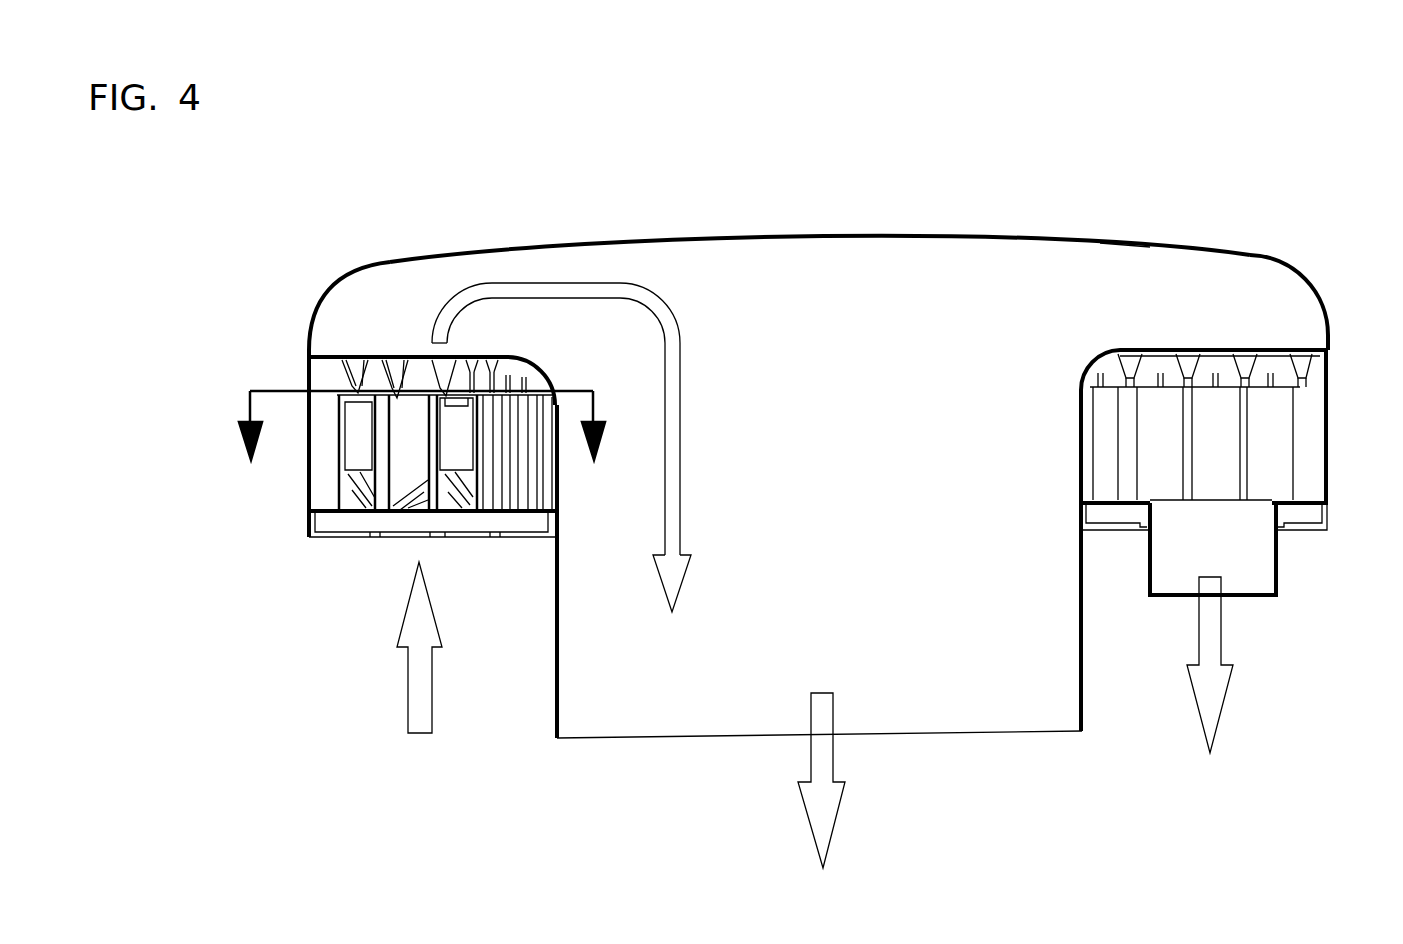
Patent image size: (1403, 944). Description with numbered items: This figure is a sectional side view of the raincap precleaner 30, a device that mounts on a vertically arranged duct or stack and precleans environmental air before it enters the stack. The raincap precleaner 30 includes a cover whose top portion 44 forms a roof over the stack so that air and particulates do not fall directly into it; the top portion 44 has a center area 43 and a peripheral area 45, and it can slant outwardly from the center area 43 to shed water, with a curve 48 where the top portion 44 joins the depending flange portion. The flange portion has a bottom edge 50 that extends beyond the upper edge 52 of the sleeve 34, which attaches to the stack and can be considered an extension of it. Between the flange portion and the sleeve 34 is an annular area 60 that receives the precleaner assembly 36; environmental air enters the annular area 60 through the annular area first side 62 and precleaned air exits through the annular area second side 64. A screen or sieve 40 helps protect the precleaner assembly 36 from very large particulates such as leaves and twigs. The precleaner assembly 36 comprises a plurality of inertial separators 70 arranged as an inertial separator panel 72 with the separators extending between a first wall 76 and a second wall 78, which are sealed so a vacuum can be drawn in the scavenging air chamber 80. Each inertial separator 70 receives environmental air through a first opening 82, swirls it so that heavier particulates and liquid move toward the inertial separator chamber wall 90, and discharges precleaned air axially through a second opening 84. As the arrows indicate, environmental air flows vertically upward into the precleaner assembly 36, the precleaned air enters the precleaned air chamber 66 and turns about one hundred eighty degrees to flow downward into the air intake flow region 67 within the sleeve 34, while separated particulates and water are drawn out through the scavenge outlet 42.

The raincap precleaner 30 is at (1130, 152).
The sleeve 34 is at (555, 690).
The precleaner assembly 36 is at (207, 450).
The screen or sieve 40 is at (495, 537).
The scavenge outlet 42 is at (1277, 580).
The center area 43 is at (875, 232).
The top portion 44 is at (1126, 243).
The peripheral area 45 is at (1278, 262).
The curve 48 is at (330, 290).
The bottom edge 50 is at (1082, 731).
The upper edge 52 is at (1120, 352).
The annular area 60 is at (363, 657).
The annular area first side 62 is at (368, 537).
The annular area second side 64 is at (410, 355).
The precleaned air chamber 66 is at (420, 280).
The air intake flow region 67 is at (915, 620).
The inertial separator 70 is at (353, 428).
The inertial separator panel 72 is at (335, 474).
The first wall 76 is at (1312, 500).
The second wall 78 is at (1305, 345).
The scavenging air chamber 80 is at (1242, 400).
The first opening 82 is at (414, 510).
The second opening 84 is at (357, 357).
The inertial separator chamber wall 90 is at (345, 418).